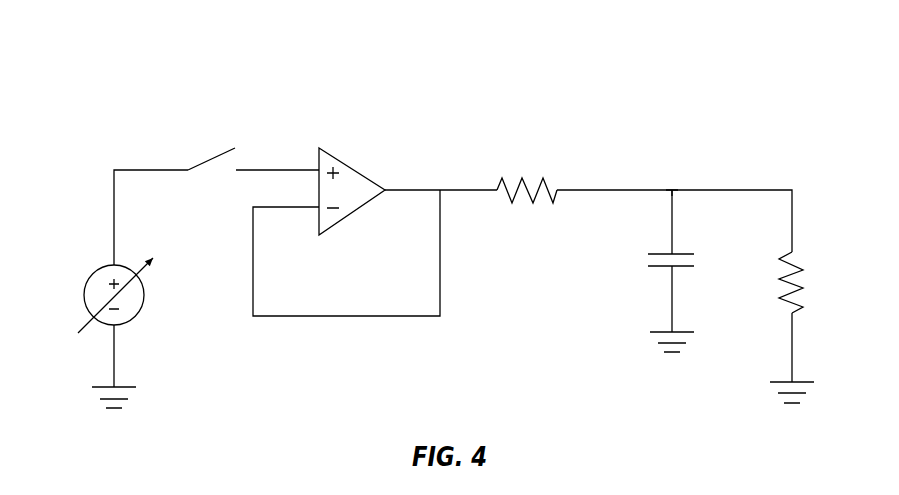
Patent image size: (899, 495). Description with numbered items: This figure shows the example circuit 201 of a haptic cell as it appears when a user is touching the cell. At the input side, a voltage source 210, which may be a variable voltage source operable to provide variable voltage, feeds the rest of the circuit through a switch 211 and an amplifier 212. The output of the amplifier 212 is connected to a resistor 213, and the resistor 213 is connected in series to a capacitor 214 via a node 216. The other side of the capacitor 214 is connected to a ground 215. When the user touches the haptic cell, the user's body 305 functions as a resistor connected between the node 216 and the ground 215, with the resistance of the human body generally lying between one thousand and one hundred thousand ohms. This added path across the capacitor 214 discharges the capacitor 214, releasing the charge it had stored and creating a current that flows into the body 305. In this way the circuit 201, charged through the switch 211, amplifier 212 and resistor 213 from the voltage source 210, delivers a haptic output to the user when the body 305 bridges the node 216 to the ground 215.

The circuit 201 is at (643, 70).
The voltage source 210 is at (77, 286).
The switch 211 is at (208, 150).
The amplifier 212 is at (357, 161).
The resistor 213 is at (514, 170).
The capacitor 214 is at (702, 258).
The ground 215 is at (817, 398).
The node 216 is at (676, 181).
The body 305 is at (807, 296).